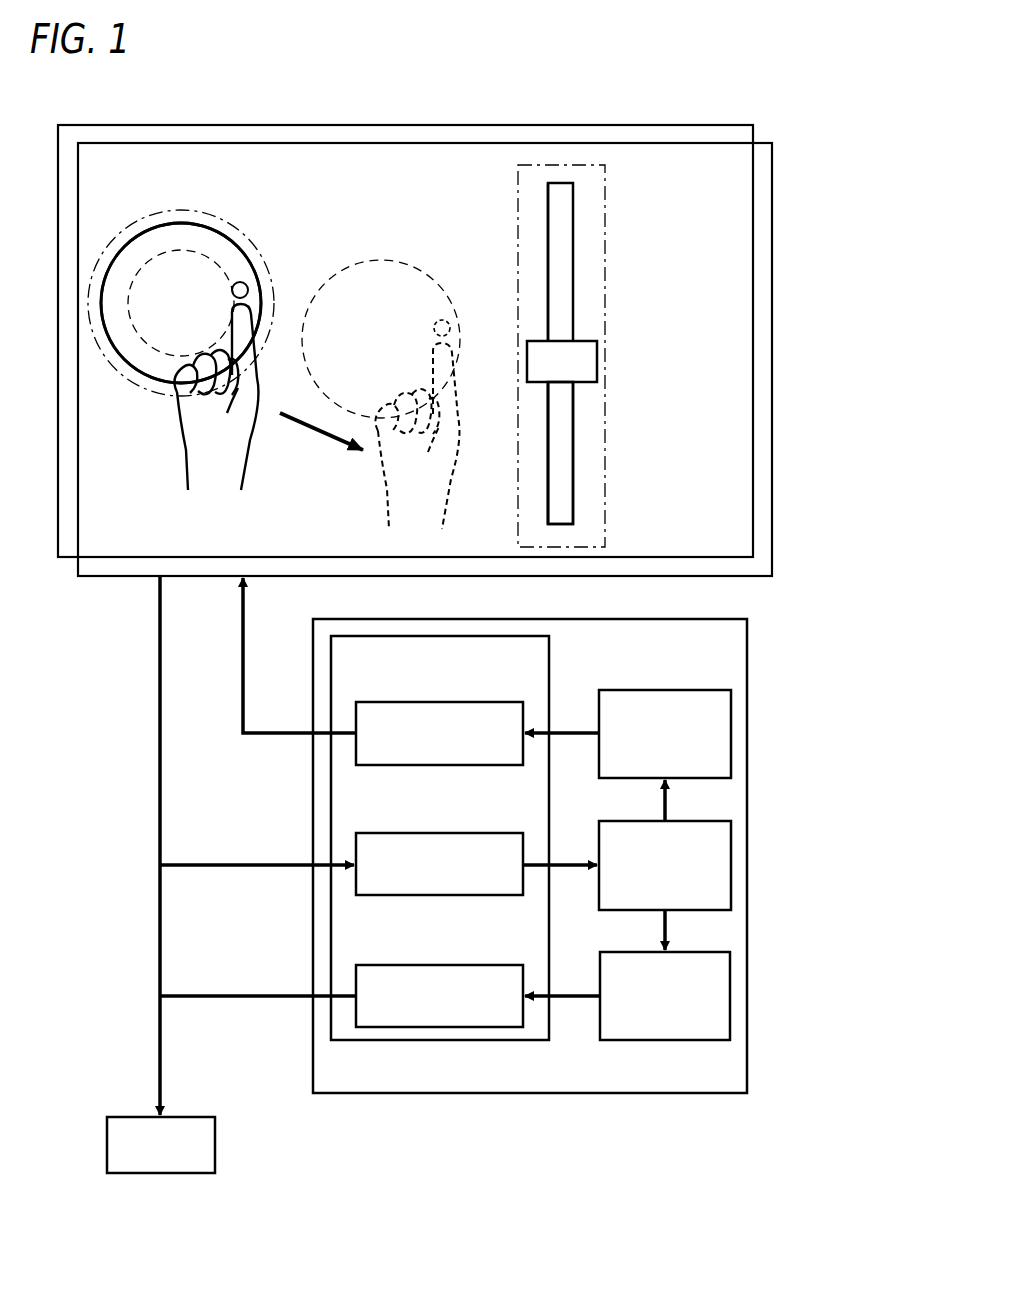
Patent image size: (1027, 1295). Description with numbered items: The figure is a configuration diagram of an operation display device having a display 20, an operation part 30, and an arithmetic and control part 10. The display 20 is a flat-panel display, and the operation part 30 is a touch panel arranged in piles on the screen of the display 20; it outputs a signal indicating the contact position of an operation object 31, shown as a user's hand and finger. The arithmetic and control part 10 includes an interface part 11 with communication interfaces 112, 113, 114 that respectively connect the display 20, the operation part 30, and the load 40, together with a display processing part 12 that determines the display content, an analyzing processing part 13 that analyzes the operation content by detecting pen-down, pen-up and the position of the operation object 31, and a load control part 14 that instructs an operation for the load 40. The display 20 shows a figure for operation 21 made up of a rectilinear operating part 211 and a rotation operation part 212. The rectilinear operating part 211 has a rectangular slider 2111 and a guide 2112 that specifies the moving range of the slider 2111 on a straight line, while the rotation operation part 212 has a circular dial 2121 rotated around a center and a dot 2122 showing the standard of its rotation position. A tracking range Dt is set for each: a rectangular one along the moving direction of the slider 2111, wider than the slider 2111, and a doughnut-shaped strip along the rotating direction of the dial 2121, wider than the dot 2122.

The arithmetic and control part 10 is at (678, 1093).
The interface part 11 is at (545, 661).
The communication interface 112 is at (396, 766).
The communication interface 113 is at (397, 897).
The communication interface 114 is at (477, 965).
The display processing part 12 is at (728, 714).
The analyzing processing part 13 is at (728, 852).
The load control part 14 is at (722, 998).
The display 20 is at (725, 130).
The figure for operation 21 is at (112, 354).
The rectilinear operating part 211 is at (574, 294).
The slider 2111 is at (590, 360).
The guide 2112 is at (574, 453).
The rotation operation part 212 is at (150, 225).
The dial 2121 is at (237, 248).
The dot 2122 is at (247, 287).
The operation part 30 is at (765, 217).
The operation object 31 is at (191, 423).
The load 40 is at (121, 1119).
The tracking range Dt is at (218, 220).